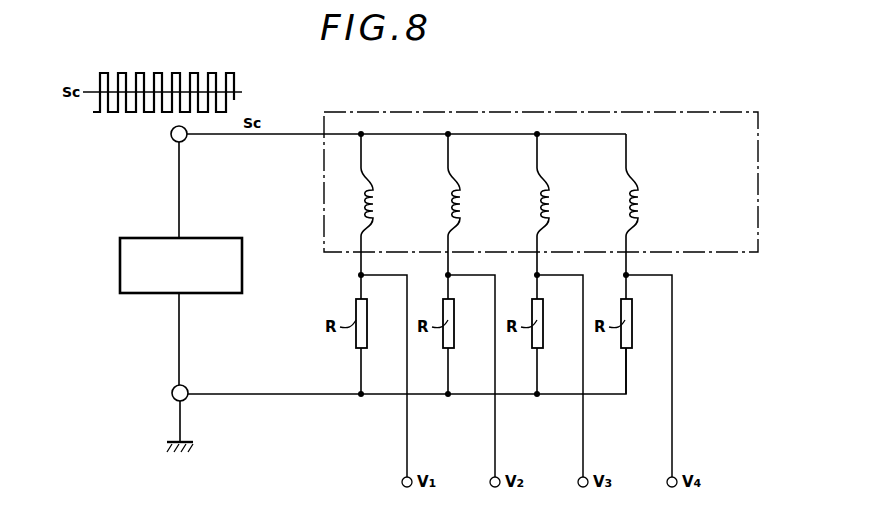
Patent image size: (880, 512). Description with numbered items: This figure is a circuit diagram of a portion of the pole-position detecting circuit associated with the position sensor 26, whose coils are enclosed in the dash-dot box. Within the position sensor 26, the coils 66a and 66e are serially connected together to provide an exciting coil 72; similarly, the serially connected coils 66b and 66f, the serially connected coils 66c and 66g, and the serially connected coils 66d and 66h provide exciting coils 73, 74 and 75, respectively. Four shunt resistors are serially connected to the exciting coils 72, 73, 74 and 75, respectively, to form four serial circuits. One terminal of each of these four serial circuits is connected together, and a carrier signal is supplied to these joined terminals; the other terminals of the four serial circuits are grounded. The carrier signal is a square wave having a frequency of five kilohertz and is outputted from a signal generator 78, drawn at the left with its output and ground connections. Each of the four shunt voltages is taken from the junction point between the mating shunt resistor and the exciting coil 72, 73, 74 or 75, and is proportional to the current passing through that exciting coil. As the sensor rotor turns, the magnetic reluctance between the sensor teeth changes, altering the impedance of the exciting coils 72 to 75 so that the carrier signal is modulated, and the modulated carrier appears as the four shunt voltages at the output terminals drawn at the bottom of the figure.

The position sensor 26 is at (700, 108).
The exciting coil 72 is at (405, 264).
The exciting coil 73 is at (490, 264).
The exciting coil 74 is at (582, 264).
The exciting coil 75 is at (688, 264).
The signal generator 78 is at (142, 238).
The coil 66a is at (405, 264).
The coil 66b is at (490, 264).
The coil 66c is at (582, 264).
The coil 66d is at (688, 264).
The coil 66e is at (376, 214).
The coil 66f is at (463, 214).
The coil 66g is at (552, 214).
The coil 66h is at (641, 205).